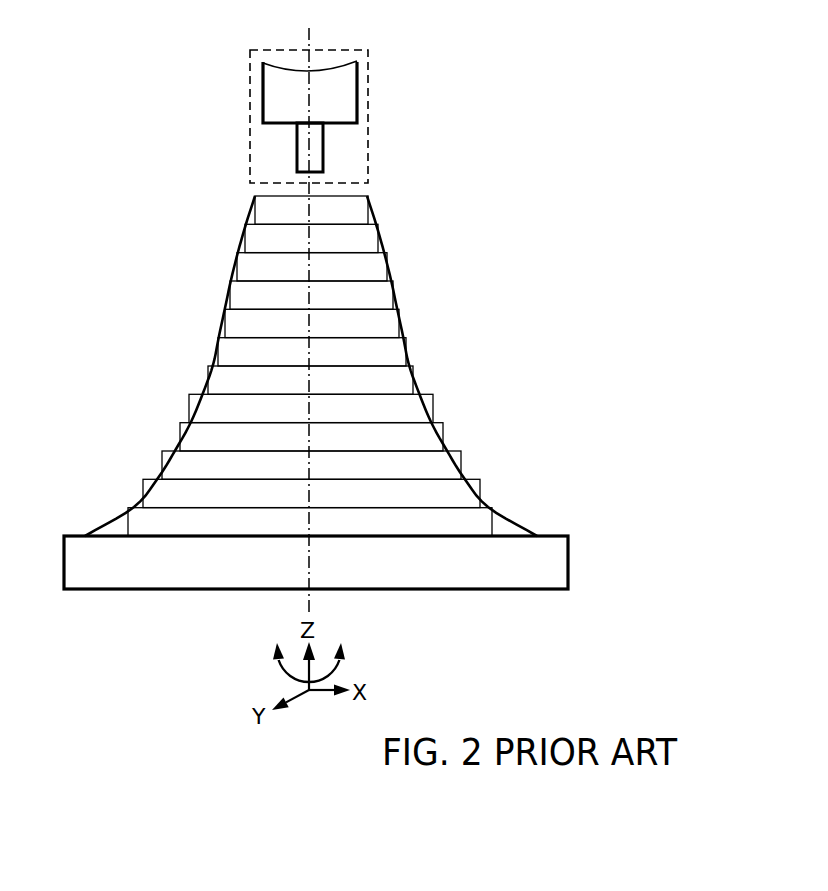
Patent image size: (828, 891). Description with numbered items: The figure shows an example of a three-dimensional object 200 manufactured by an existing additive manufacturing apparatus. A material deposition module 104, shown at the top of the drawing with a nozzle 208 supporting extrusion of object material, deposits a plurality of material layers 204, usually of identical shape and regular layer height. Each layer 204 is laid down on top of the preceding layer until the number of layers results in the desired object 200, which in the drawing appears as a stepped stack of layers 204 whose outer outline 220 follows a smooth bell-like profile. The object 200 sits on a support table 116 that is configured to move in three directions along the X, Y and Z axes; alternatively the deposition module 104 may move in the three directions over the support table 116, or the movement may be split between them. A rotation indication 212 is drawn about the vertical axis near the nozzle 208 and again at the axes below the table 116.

The 3D object material deposition module 104 is at (253, 98).
The nozzle cup and rotation direction 212 is at (343, 95).
The exchangeable nozzle 208 is at (315, 145).
The 3D object 200 is at (310, 360).
The layer 204 is at (382, 322).
The bell-shaped profile curve 220 is at (455, 369).
The support table 116 is at (548, 558).